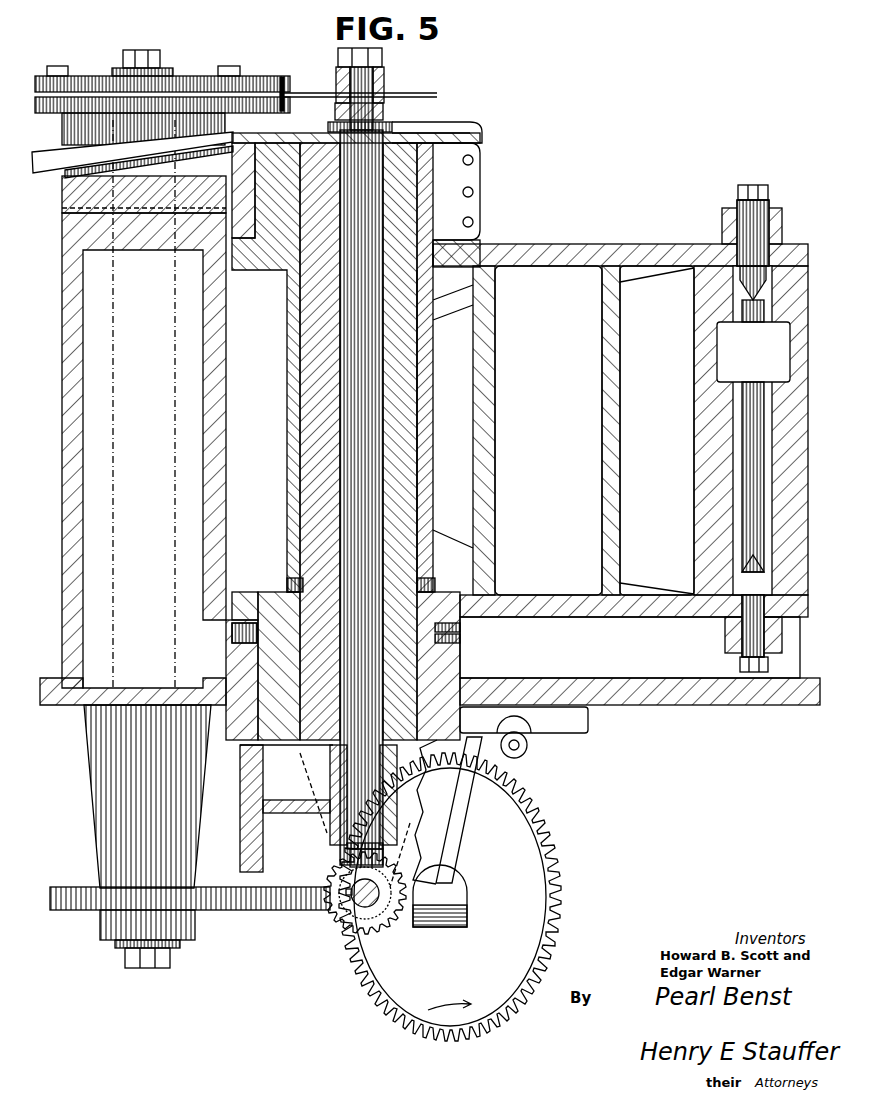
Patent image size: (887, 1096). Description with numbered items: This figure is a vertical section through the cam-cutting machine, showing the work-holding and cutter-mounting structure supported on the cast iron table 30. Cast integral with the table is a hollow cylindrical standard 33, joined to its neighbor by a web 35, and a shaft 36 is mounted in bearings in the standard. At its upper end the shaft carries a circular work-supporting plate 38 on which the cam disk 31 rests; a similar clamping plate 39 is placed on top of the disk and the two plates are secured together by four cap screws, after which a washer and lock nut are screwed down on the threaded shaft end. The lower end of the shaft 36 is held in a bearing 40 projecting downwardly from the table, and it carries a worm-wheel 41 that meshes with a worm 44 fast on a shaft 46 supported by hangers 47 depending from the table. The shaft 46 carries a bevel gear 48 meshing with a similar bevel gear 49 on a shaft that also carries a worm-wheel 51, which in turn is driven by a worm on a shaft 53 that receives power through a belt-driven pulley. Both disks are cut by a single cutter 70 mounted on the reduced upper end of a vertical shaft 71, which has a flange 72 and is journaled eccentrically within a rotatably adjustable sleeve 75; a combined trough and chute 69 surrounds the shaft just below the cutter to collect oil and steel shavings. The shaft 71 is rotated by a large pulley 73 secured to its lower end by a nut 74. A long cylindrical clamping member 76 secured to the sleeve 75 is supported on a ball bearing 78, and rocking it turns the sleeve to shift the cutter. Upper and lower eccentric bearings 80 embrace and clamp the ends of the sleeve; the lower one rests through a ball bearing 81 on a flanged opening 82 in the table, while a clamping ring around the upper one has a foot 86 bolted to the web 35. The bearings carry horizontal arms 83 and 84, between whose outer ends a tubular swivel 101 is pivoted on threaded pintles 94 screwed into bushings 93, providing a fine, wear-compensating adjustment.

The table 30 is at (677, 704).
The cam disk 31 is at (424, 93).
The standard 33 is at (66, 127).
The web 35 is at (64, 332).
The shaft 36 is at (143, 50).
The work-supporting plate 38 is at (284, 106).
The clamping plate 39 is at (284, 76).
The bearing 40 is at (101, 855).
The worm-wheel 41 is at (232, 908).
The worm 44 is at (348, 914).
The shaft 46 is at (360, 908).
The hanger 47 is at (422, 785).
The bevel gear 48 is at (362, 945).
The bevel gear 49 is at (402, 926).
The worm-wheel 51 is at (556, 872).
The shaft 53 is at (524, 745).
The combined trough and chute 69 is at (485, 128).
The cutter 70 is at (381, 82).
The shaft 71 is at (372, 383).
The flange 72 is at (394, 123).
The pulley 73 is at (252, 802).
The nut 74 is at (347, 862).
The sleeve 75 is at (412, 443).
The clamping member 76 is at (428, 490).
The ball bearing 78 is at (290, 585).
The eccentric bearing 80 is at (432, 190).
The ball bearing 81 is at (460, 628).
The flanged opening 82 is at (460, 649).
The arm 83 is at (580, 246).
The arm 84 is at (560, 617).
The foot 86 is at (64, 192).
The bushing 93 is at (782, 215).
The threaded pintle 94 is at (778, 232).
The tubular swivel 101 is at (697, 478).